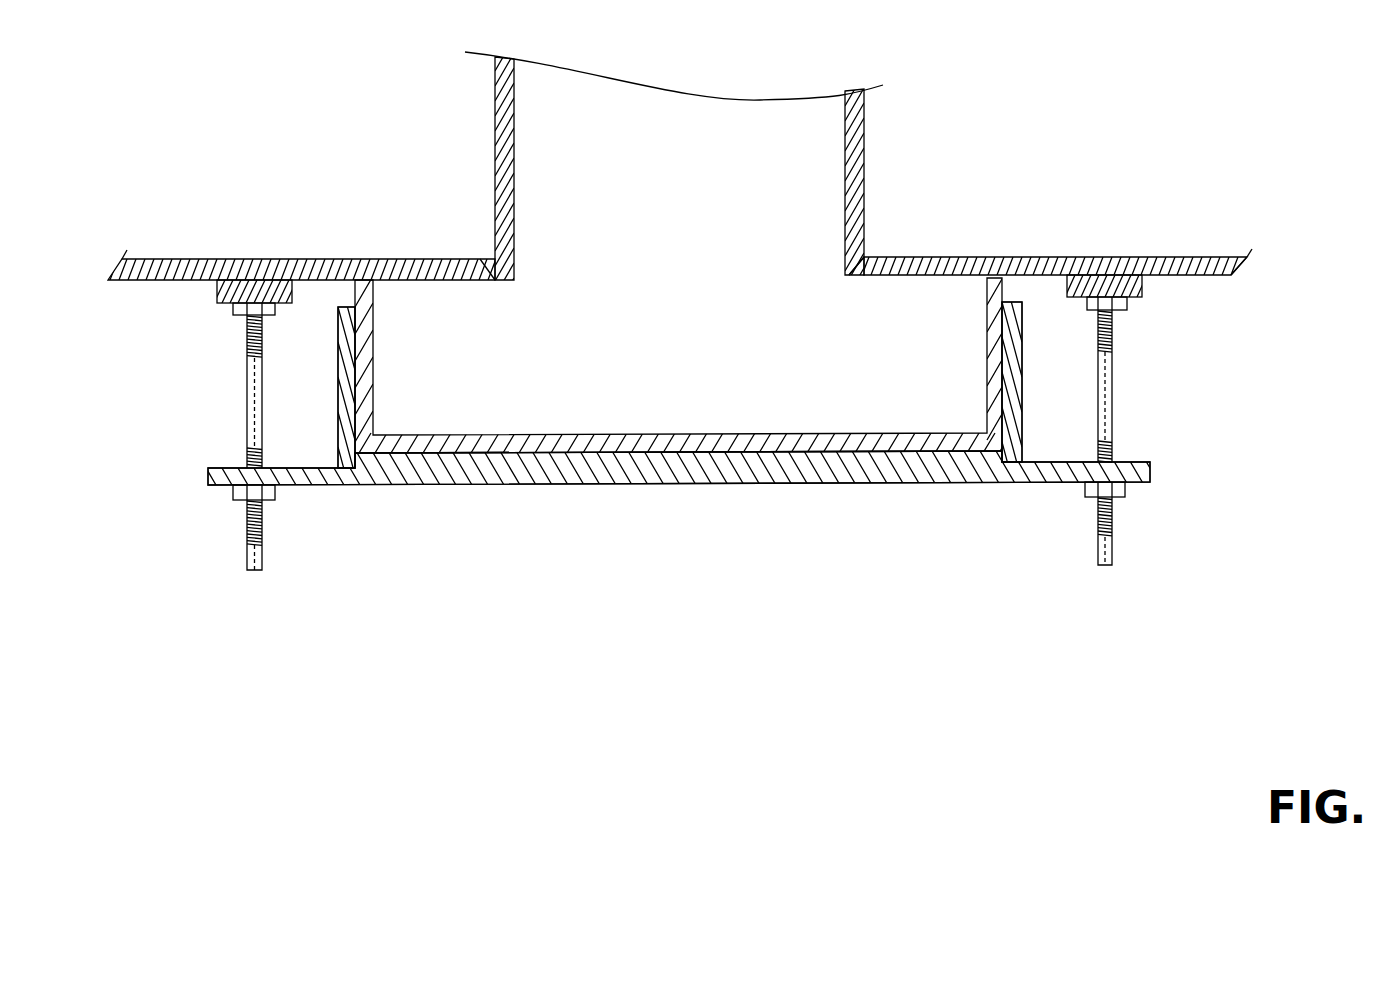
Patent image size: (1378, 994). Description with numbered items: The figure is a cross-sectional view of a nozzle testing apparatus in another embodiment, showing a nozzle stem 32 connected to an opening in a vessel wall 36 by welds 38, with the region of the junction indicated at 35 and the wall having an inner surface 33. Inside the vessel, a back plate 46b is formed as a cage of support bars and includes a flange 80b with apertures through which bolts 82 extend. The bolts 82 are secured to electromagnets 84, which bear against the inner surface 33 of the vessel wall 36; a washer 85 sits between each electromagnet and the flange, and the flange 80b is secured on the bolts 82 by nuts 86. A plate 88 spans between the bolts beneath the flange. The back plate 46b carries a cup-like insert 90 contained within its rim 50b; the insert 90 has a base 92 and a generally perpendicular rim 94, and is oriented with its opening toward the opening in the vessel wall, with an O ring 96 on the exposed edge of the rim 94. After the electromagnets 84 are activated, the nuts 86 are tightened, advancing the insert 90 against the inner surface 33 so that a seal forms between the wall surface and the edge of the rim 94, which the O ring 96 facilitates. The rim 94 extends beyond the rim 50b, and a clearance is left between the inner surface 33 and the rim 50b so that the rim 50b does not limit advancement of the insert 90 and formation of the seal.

The stem 32 is at (865, 167).
The inner surface 33 is at (1214, 274).
The sink deck junction 35 is at (975, 245).
The vessel wall 36 is at (1195, 260).
The welds 38 is at (867, 257).
The back plate 46b is at (372, 511).
The rim 50b is at (338, 323).
The flange 80b is at (207, 478).
The bolts 82 is at (246, 393).
The electromagnets 84 is at (217, 290).
The washer 85 is at (233, 308).
The nuts 86 is at (233, 498).
The mounting plate 88 is at (504, 473).
The insert 90 is at (391, 388).
The base 92 is at (736, 433).
The rim 94 is at (375, 347).
The O ring 96 is at (373, 287).